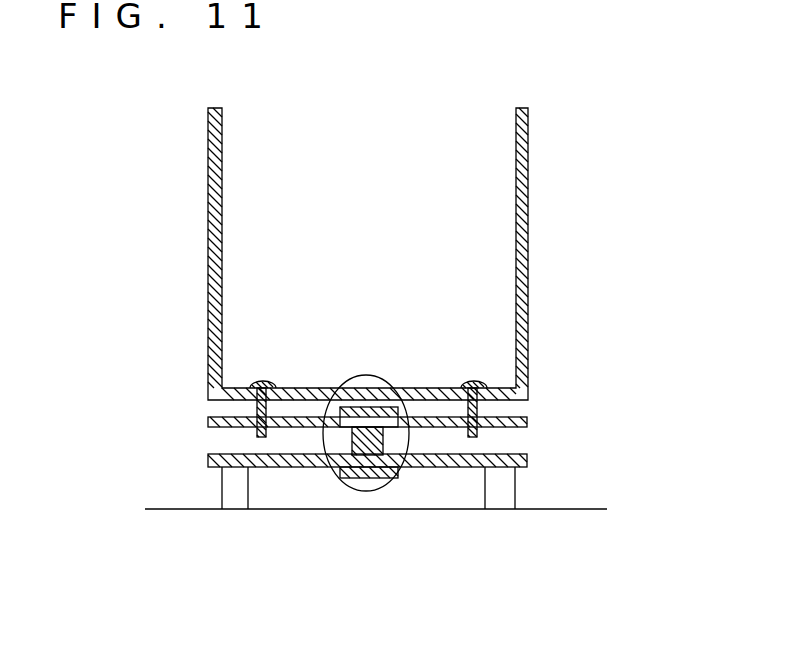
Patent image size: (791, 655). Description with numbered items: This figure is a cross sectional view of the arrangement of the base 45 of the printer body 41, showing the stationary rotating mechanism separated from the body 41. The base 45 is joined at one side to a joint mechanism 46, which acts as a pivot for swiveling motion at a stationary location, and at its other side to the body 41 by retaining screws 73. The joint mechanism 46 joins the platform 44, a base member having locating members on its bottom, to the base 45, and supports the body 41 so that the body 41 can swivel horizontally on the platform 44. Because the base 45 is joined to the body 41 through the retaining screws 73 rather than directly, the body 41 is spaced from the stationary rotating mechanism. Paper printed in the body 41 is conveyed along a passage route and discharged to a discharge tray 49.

The body 41 is at (527, 325).
The platform 44 is at (527, 460).
The base 45 is at (527, 420).
The joint mechanism 46 is at (382, 480).
The discharge tray 49 is at (248, 497).
The retaining screws 73 is at (470, 382).